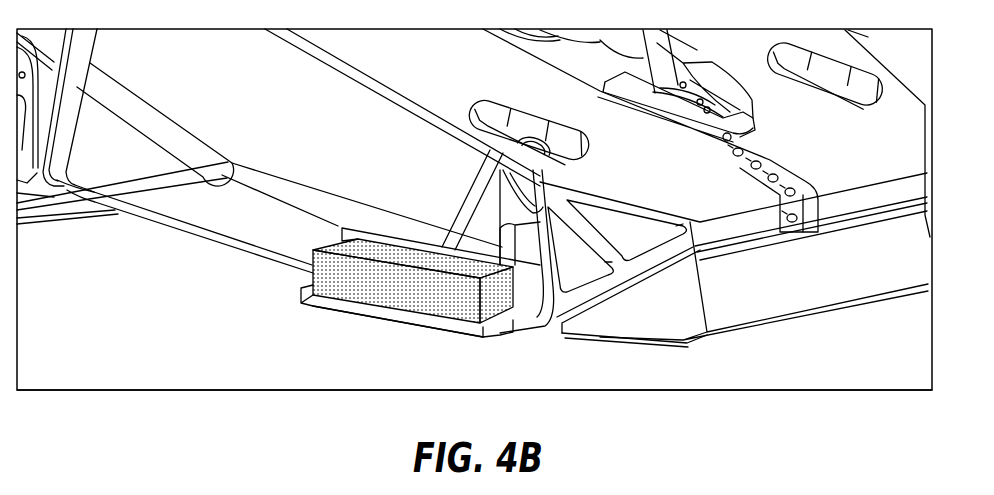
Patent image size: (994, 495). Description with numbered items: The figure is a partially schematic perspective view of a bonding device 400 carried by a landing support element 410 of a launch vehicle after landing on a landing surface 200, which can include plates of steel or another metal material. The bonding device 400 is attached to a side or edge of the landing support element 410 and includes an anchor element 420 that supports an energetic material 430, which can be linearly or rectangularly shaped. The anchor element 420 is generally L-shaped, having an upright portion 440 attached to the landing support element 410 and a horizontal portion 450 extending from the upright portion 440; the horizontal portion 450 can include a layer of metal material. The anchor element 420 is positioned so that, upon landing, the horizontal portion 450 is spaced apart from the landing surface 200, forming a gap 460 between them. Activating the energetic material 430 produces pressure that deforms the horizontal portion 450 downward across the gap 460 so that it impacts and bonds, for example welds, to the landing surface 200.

The landing surface 200 is at (82, 318).
The bonding device 400 is at (297, 308).
The landing support element 410 is at (349, 143).
The anchor element 420 is at (447, 332).
The energetic material 430 is at (358, 283).
The upright portion 440 is at (532, 285).
The horizontal portion 450 is at (325, 307).
The gap 460 is at (423, 328).